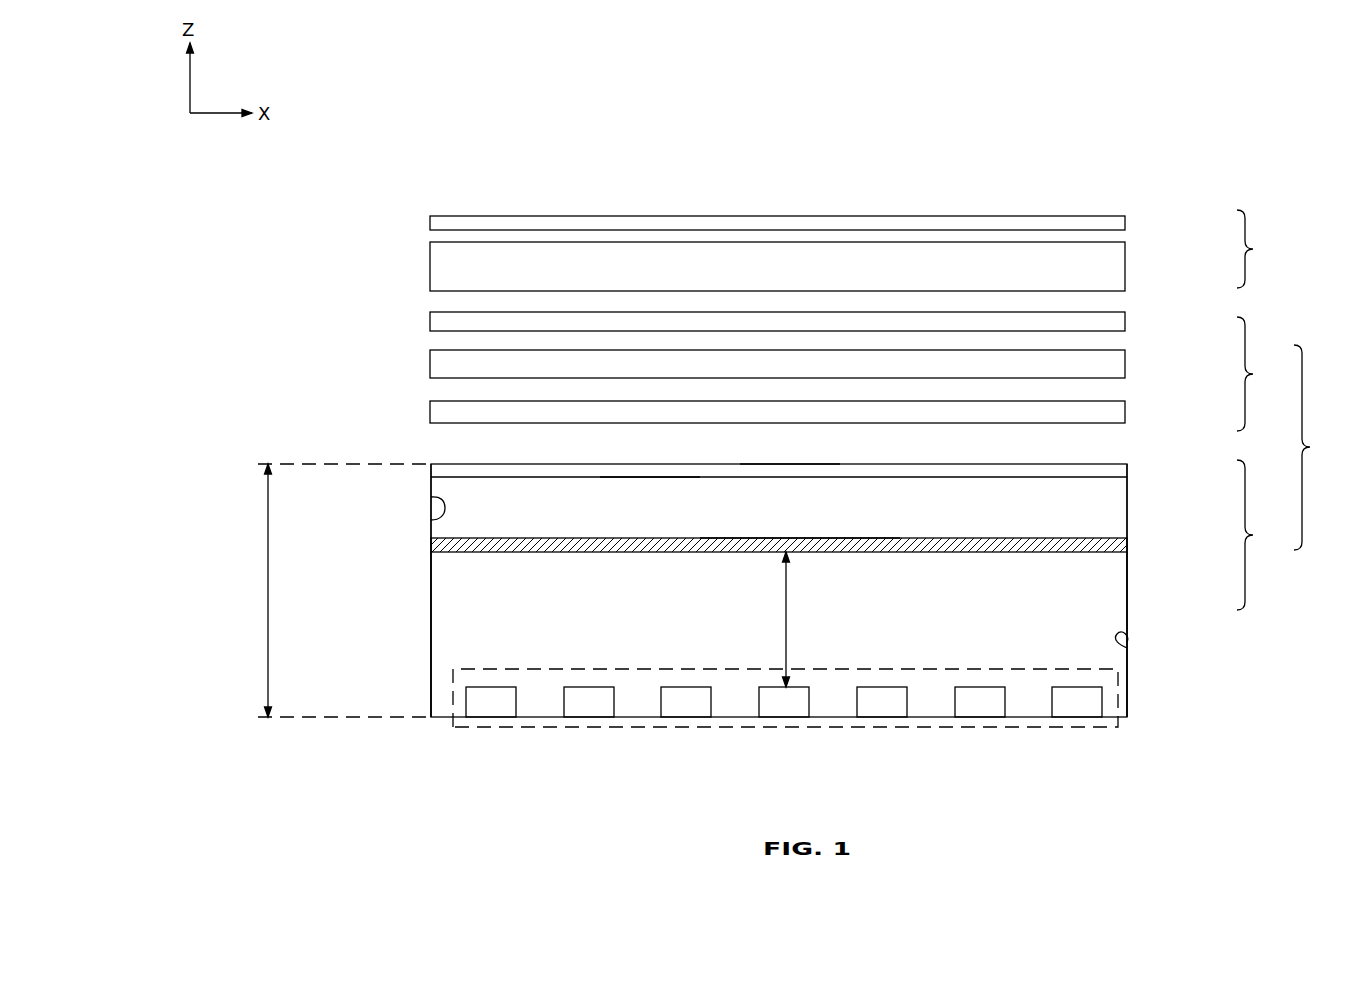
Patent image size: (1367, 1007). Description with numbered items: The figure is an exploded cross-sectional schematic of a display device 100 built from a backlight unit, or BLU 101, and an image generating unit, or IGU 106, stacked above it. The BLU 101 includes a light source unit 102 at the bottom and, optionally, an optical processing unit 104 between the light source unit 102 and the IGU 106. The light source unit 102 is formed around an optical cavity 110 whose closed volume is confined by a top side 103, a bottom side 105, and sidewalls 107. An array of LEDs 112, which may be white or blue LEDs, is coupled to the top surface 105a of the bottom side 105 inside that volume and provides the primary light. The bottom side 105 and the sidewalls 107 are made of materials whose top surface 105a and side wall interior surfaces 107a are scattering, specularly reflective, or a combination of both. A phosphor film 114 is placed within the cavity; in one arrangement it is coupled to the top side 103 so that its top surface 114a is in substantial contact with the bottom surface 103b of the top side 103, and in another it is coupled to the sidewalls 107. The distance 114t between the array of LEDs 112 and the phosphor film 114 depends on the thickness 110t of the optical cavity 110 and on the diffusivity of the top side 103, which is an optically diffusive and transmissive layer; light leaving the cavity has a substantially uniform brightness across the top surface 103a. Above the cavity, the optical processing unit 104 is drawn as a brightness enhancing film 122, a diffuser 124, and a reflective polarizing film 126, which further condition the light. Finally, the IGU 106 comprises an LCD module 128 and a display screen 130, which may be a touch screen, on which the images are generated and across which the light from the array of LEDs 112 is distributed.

The display device 100 is at (1133, 158).
The BLU 101 is at (1322, 447).
The light source unit 102 is at (1265, 535).
The top side 103 is at (461, 473).
The top surface 103a is at (782, 465).
The bottom surface 103b is at (632, 476).
The optical processing unit 104 is at (1265, 374).
The bottom side 105 is at (538, 720).
The top surface 105a is at (445, 717).
The image generating unit 106 is at (1266, 249).
The sidewalls 107 is at (431, 615).
The side wall interior surfaces 107a is at (431, 520).
The optical cavity 110 is at (1132, 493).
The thickness 110t is at (268, 583).
The array of LEDs 112 is at (1047, 668).
The phosphor film 114 is at (1113, 553).
The top surface 114a is at (865, 538).
The distance 114t is at (786, 637).
The brightness enhancing film 122 is at (1117, 420).
The diffuser 124 is at (1117, 366).
The reflective polarizing film 126 is at (1117, 325).
The LCD module 128 is at (1117, 270).
The display screen 130 is at (1125, 223).